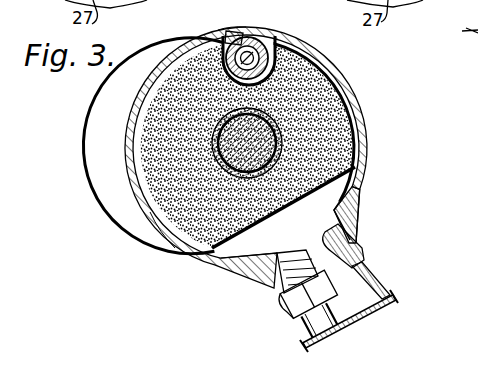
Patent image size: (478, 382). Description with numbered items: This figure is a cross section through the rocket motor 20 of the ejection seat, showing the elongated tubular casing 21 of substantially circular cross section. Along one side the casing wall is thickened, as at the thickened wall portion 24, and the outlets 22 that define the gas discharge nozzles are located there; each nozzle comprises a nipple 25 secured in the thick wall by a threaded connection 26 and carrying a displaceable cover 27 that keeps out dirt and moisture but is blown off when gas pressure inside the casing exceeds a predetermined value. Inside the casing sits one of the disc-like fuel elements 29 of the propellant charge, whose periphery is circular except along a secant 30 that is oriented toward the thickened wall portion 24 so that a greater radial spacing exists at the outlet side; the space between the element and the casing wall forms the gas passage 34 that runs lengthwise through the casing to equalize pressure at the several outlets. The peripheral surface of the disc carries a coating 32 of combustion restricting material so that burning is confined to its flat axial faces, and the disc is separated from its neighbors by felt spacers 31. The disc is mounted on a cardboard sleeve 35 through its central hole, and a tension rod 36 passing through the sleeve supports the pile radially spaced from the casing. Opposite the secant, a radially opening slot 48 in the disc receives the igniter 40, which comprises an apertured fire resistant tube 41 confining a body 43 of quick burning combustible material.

The rocket motor 20 is at (370, 157).
The tubular casing 21 is at (362, 103).
The outlets 22 is at (359, 251).
The thickened wall portion 24 is at (363, 210).
The nipples 25 is at (298, 312).
The threaded connection 26 is at (270, 278).
The displaceable cover 27 is at (357, 320).
The disc-like fuel elements 29 is at (137, 185).
The secant 30 is at (272, 212).
The spacers 31 is at (214, 141).
The coating 32 is at (154, 215).
The gas passage 34 is at (243, 242).
The sleeve 35 is at (281, 127).
The tension rod 36 is at (158, 78).
The igniter 40 is at (262, 42).
The tube 41 is at (267, 58).
The body of combustible material 43 is at (243, 22).
The slot 48 is at (218, 32).